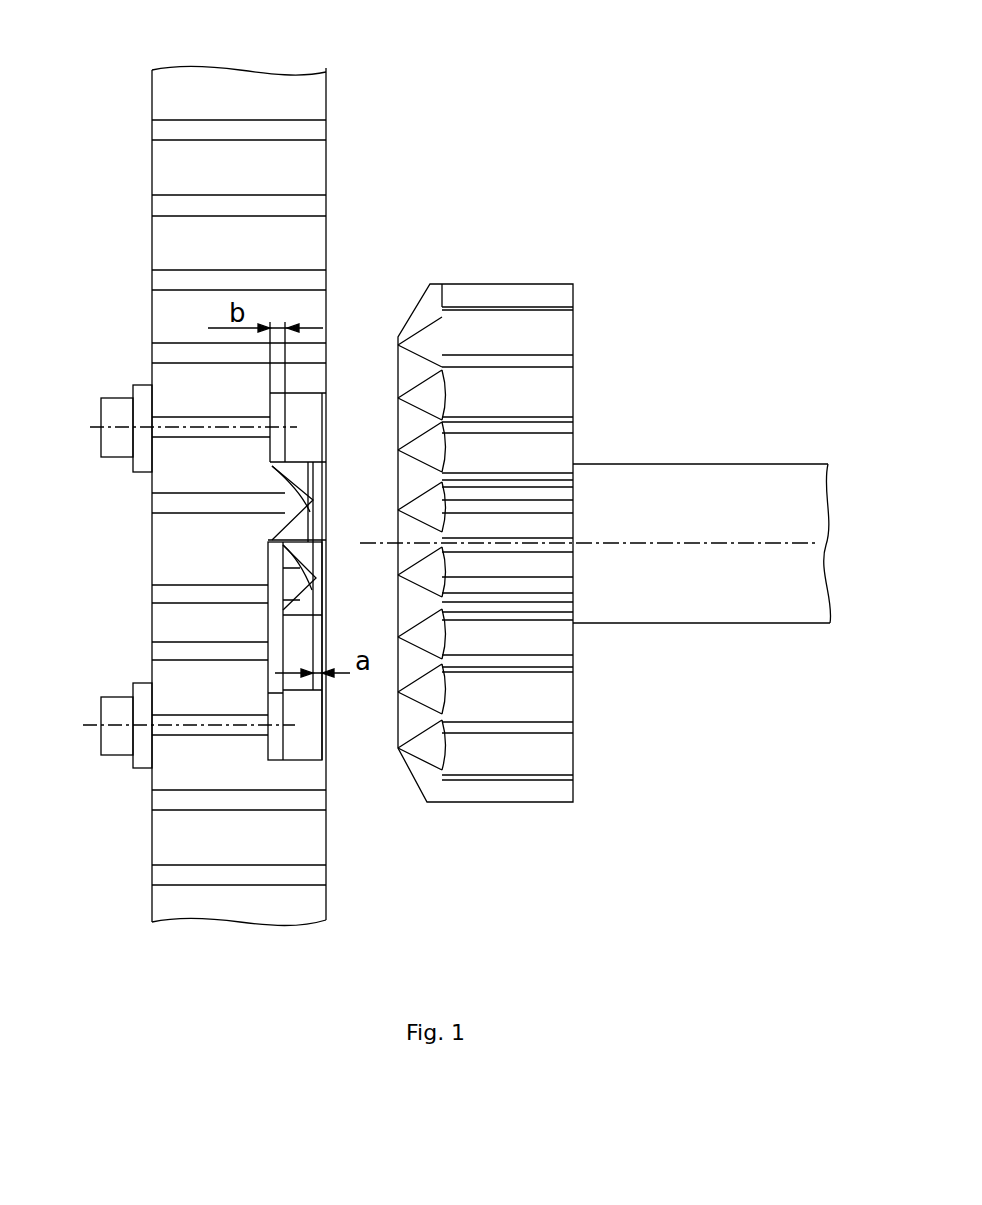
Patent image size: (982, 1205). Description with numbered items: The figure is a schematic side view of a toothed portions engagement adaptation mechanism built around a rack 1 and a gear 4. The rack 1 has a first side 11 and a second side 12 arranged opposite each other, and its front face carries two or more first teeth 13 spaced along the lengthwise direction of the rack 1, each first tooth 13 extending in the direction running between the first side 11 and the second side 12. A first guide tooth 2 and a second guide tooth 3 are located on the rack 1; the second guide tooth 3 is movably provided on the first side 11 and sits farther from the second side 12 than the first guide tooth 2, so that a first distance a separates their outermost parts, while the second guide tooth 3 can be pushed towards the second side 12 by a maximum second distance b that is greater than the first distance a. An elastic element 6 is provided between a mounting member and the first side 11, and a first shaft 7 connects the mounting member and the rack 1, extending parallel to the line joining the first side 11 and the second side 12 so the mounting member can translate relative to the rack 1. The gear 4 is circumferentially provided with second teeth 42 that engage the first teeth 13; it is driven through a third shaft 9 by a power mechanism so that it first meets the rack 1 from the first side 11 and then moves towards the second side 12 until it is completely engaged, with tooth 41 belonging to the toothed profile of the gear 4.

The rack 1 is at (357, 138).
The first side 11 is at (326, 222).
The second side 12 is at (157, 227).
The first teeth 13 is at (183, 133).
The first guide tooth 2 is at (305, 505).
The second guide tooth 3 is at (312, 580).
The gear 4 is at (587, 475).
The gear tooth 41 is at (413, 650).
The second teeth 42 is at (565, 327).
The elastic element 6 is at (278, 581).
The first shaft 7 is at (115, 407).
The third shaft 9 is at (753, 487).